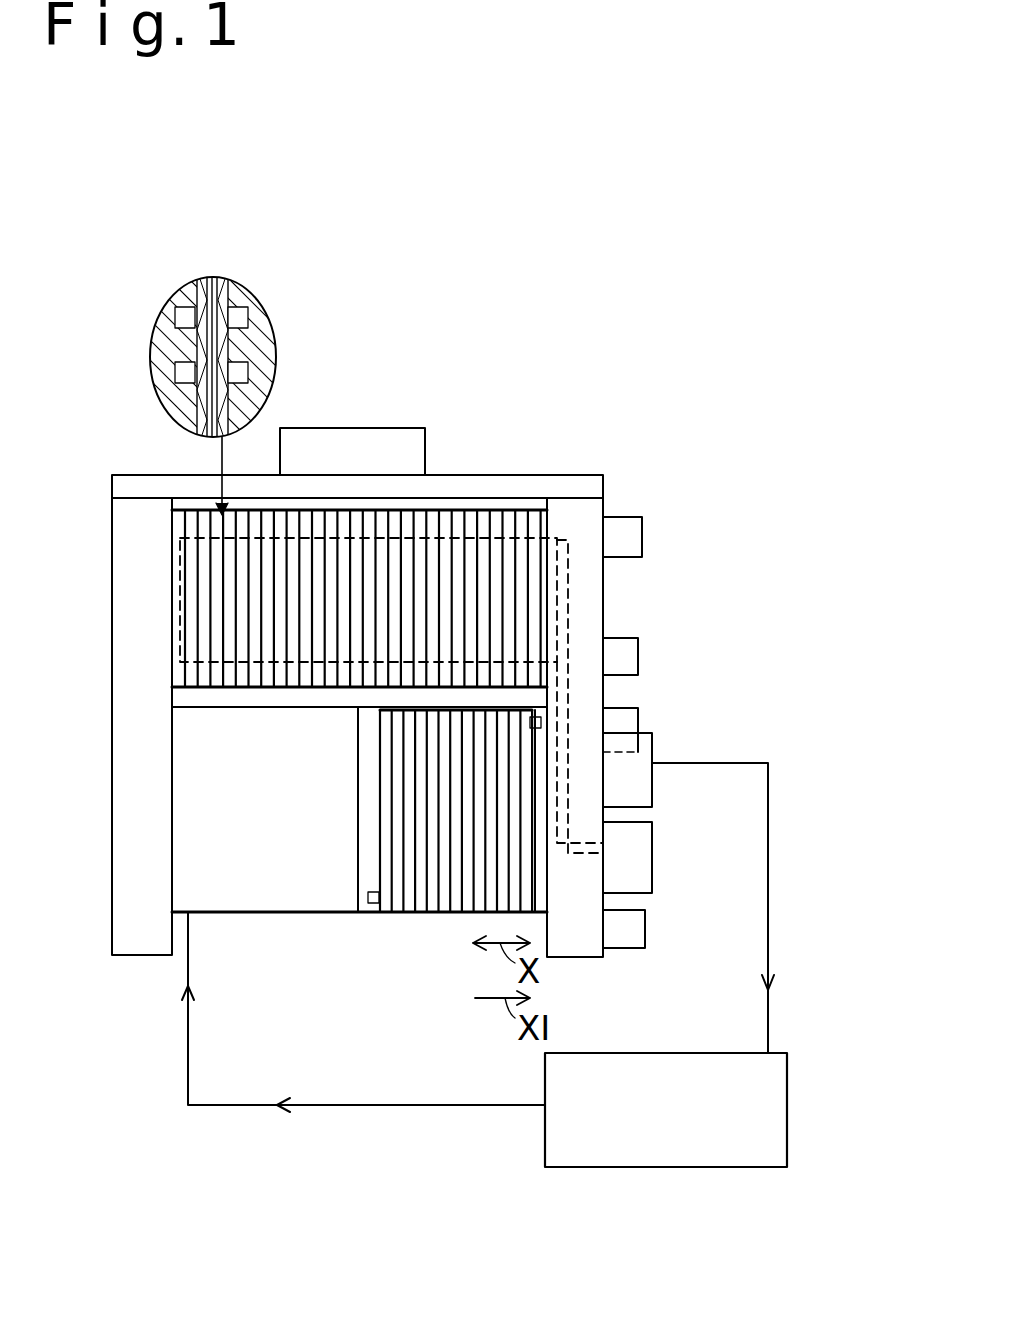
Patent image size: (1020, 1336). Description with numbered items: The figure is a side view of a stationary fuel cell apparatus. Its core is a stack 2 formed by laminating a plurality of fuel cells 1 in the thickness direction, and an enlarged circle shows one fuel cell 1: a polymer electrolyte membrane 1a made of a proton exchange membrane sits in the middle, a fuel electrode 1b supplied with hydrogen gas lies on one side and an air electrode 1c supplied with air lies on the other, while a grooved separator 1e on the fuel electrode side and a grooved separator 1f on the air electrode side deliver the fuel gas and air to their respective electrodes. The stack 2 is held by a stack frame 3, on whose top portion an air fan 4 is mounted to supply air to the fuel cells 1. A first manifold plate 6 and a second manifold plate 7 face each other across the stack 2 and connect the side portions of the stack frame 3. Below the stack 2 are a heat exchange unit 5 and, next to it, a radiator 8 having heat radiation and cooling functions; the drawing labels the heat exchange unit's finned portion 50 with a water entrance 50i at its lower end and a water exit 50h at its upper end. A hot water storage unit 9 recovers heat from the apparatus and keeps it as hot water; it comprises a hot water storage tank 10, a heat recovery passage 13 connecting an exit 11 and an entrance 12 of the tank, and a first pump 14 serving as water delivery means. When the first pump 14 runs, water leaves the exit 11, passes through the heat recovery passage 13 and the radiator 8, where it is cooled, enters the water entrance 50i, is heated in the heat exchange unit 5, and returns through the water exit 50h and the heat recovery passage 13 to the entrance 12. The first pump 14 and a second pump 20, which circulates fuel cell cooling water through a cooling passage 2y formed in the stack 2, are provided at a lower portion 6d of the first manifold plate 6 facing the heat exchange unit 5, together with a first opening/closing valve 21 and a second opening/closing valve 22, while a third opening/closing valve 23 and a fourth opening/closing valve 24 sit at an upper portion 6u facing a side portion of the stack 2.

The fuel cell 1 is at (228, 585).
The polymer electrolyte membrane 1a is at (210, 282).
The fuel electrode 1b is at (195, 290).
The air electrode 1c is at (245, 357).
The separator 1e is at (160, 337).
The separator 1f is at (265, 322).
The stack 2 is at (187, 625).
The cooling passage 2y is at (520, 502).
The stack frame 3 is at (447, 492).
The air fan 4 is at (402, 430).
The heat exchange unit 5 is at (457, 905).
The first manifold plate 6 is at (590, 576).
The upper portion of first manifold plate 6u is at (590, 515).
The lower portion of first manifold plate 6d is at (572, 868).
The second manifold plate 7 is at (135, 778).
The radiator 8 is at (205, 823).
The hot water storage unit 9 is at (677, 1140).
The hot water storage tank 10 is at (595, 1167).
The exit 11 is at (545, 1104).
The entrance 12 is at (770, 1053).
The heat recovery passage 13 is at (768, 935).
The first pump 14 is at (640, 750).
The second pump 20 is at (645, 840).
The first opening/closing valve 21 is at (645, 948).
The second opening/closing valve 22 is at (615, 708).
The third opening/closing valve 23 is at (640, 656).
The fourth opening/closing valve 24 is at (642, 540).
The fin stack 50 is at (410, 905).
The water exit 50h is at (541, 722).
The water entrance 50i is at (368, 900).